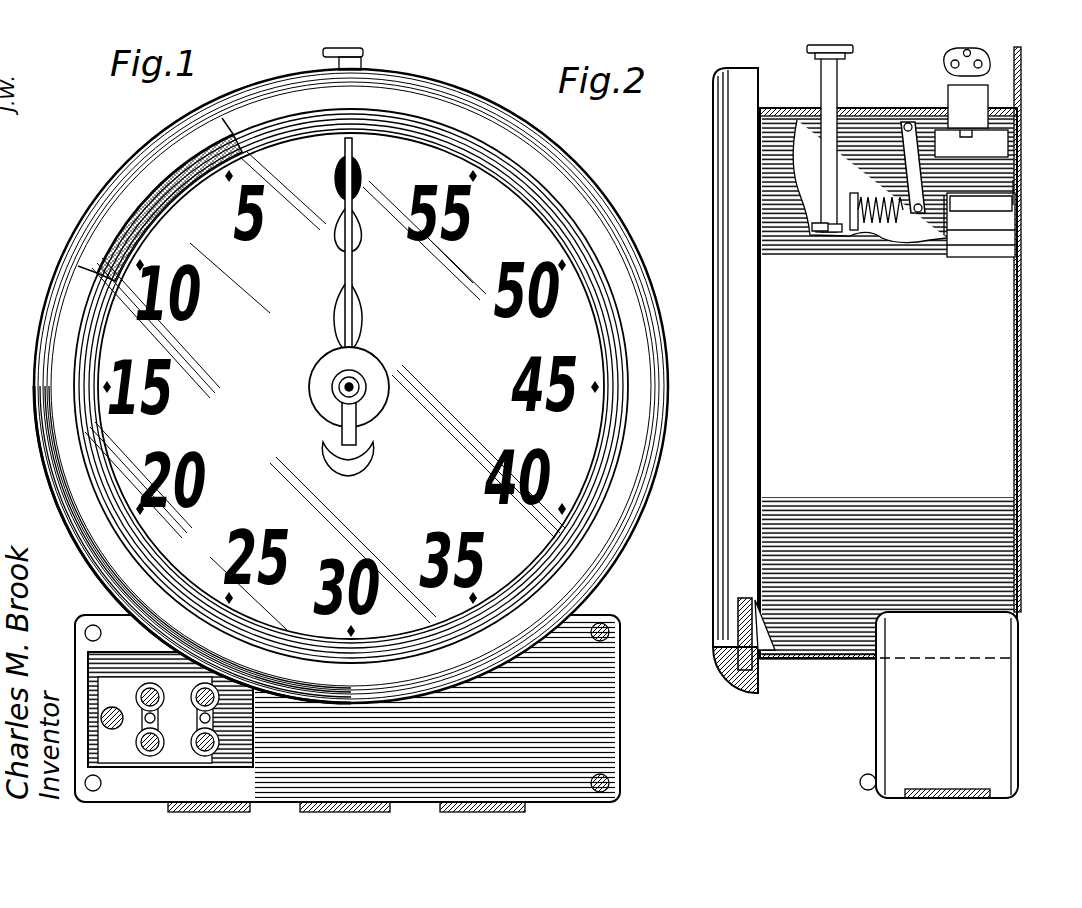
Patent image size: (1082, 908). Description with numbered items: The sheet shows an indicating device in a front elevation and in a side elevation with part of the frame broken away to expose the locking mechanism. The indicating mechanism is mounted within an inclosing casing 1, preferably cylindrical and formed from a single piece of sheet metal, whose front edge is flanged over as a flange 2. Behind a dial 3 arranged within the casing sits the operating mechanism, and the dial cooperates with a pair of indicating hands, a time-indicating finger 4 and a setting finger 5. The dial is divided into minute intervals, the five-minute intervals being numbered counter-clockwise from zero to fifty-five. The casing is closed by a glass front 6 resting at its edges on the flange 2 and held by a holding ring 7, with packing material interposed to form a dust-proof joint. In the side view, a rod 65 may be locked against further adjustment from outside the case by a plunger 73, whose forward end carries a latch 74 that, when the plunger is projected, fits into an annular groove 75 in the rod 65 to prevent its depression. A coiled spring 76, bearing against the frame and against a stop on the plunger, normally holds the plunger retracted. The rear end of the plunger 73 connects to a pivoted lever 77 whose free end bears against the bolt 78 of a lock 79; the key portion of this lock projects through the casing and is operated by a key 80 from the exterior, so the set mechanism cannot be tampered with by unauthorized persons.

In FIG. 2, the inclosing casing 1 is at (860, 108).
In FIG. 2, the flange 2 is at (757, 678).
In FIG. 1, the dial 3 is at (510, 223).
In FIG. 1, the time-indicating finger 4 is at (345, 303).
In FIG. 1, the setting finger 5 is at (360, 312).
In FIG. 1, the glass front 6 is at (578, 442).
In FIG. 2, the glass front 6 is at (738, 618).
In FIG. 2, the holding ring 7 is at (748, 694).
In FIG. 2, the rod 65 is at (821, 82).
In FIG. 2, the plunger 73 is at (1014, 192).
In FIG. 2, the latch 74 is at (851, 195).
In FIG. 2, the annular groove 75 is at (818, 226).
In FIG. 2, the coiled spring 76 is at (876, 205).
In FIG. 2, the pivoted lever 77 is at (948, 198).
In FIG. 2, the bolt 78 is at (923, 120).
In FIG. 2, the lock 79 is at (1008, 142).
In FIG. 2, the key 80 is at (944, 58).